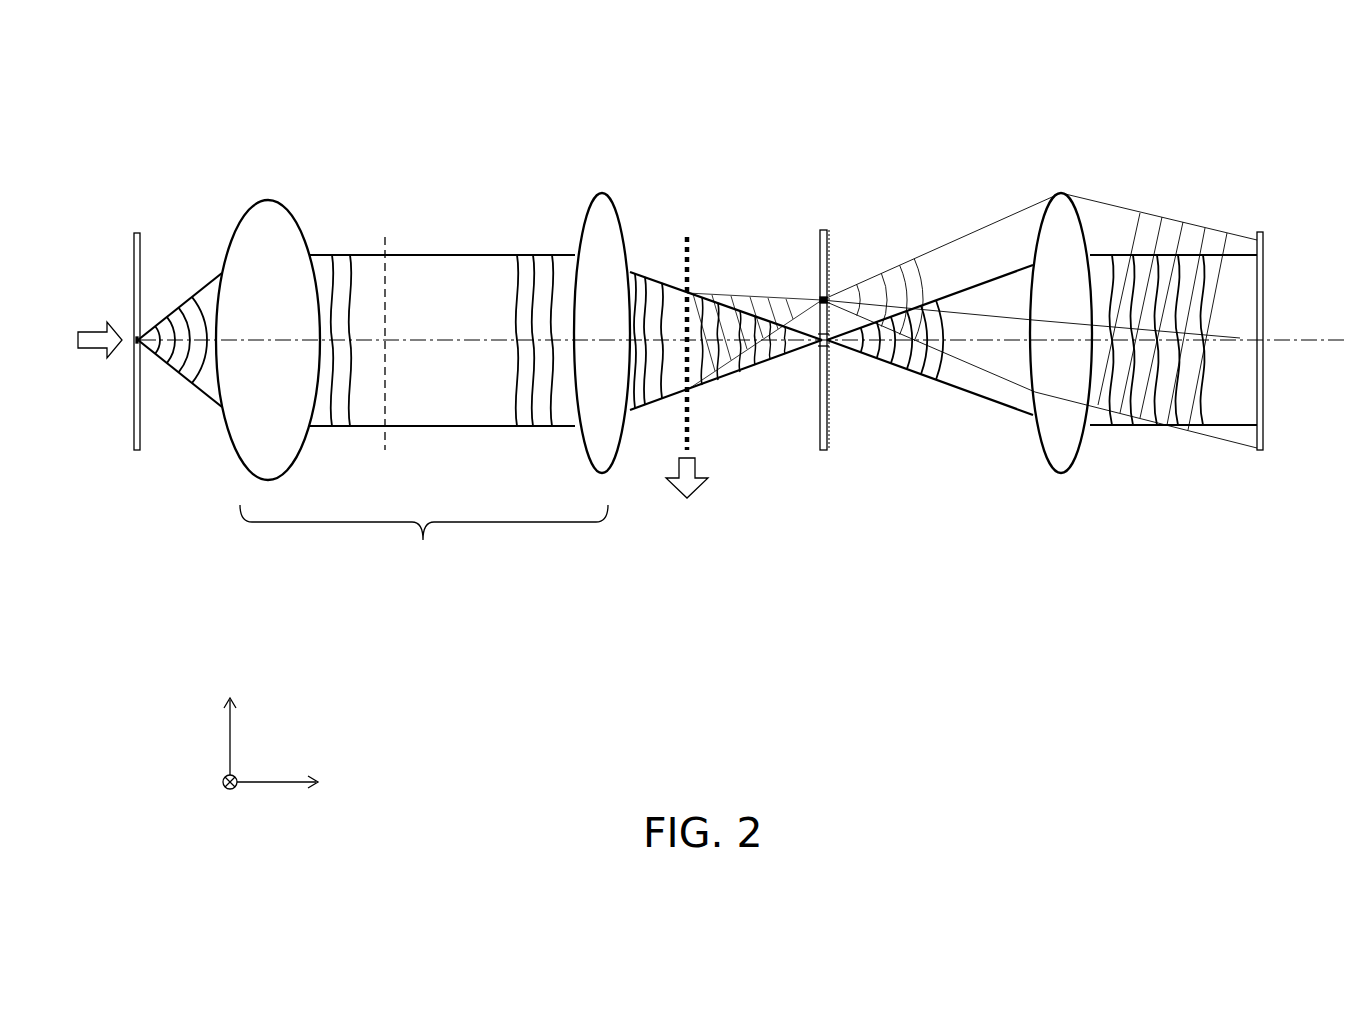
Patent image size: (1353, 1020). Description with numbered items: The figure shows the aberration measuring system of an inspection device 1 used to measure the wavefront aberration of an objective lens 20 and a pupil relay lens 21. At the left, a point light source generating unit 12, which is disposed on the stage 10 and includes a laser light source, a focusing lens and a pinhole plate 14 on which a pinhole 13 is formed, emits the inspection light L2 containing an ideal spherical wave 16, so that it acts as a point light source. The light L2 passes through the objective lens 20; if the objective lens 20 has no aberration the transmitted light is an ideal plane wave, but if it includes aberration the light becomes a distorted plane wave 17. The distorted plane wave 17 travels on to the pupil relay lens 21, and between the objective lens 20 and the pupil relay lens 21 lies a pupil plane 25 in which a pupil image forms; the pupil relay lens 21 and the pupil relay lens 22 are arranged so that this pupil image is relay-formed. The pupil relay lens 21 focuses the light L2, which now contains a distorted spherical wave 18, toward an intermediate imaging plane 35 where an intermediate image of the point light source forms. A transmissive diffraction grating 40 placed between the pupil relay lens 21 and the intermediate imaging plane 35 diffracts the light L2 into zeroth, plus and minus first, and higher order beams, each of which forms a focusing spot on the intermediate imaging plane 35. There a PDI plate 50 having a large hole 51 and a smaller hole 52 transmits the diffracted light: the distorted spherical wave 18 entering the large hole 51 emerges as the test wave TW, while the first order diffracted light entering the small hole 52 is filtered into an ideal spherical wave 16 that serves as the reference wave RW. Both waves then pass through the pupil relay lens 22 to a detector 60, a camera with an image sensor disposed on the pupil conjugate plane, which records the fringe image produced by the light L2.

The inspection device 1 is at (531, 89).
The stage 10 is at (122, 375).
The point light source generating unit 12 is at (111, 444).
The pinhole 13 is at (144, 349).
The pinhole plate 14 is at (137, 233).
The ideal spherical wave 16 is at (178, 298).
The distorted plane wave 17 is at (331, 254).
The distorted spherical wave 18 is at (648, 253).
The objective lens 20 is at (270, 200).
The pupil relay lens 21 is at (604, 193).
The pupil relay lens 22 is at (1063, 193).
The pupil plane 25 is at (389, 447).
The intermediate imaging plane 35 is at (829, 440).
The diffraction grating 40 is at (687, 237).
The PDI plate 50 is at (857, 313).
The large hole 51 is at (838, 357).
The small hole 52 is at (834, 283).
The detector 60 is at (1264, 437).
The inspection light L2 is at (86, 350).
The reference wave RW is at (947, 240).
The test wave TW is at (941, 387).